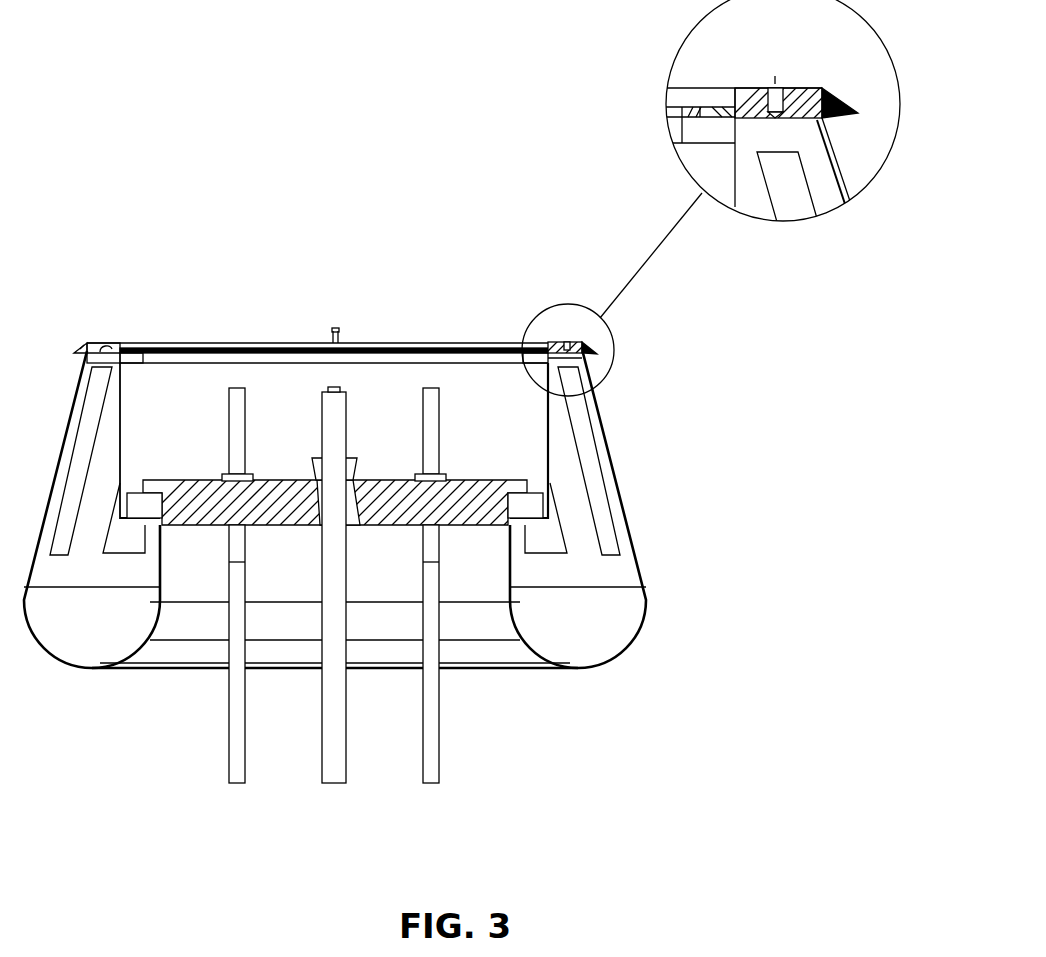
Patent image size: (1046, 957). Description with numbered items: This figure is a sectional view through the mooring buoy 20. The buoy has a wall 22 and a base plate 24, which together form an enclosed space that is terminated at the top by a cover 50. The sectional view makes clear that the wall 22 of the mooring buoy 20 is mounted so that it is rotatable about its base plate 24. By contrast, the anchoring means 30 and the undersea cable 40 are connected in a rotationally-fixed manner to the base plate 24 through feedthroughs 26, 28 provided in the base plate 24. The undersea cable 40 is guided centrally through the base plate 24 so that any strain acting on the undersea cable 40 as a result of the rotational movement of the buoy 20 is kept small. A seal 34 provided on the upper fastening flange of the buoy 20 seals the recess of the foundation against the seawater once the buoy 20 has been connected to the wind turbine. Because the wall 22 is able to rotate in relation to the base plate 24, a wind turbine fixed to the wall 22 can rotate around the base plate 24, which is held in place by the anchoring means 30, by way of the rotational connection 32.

The mooring buoy 20 is at (170, 190).
The wall 22 is at (558, 470).
The base plate 24 is at (460, 510).
The feedthrough 26 is at (315, 463).
The feedthrough 28 is at (443, 475).
The anchoring means 30 is at (237, 708).
The rotational connection 32 is at (530, 520).
The seal 34 is at (860, 122).
The undersea cable 40 is at (330, 734).
The cover 50 is at (175, 350).